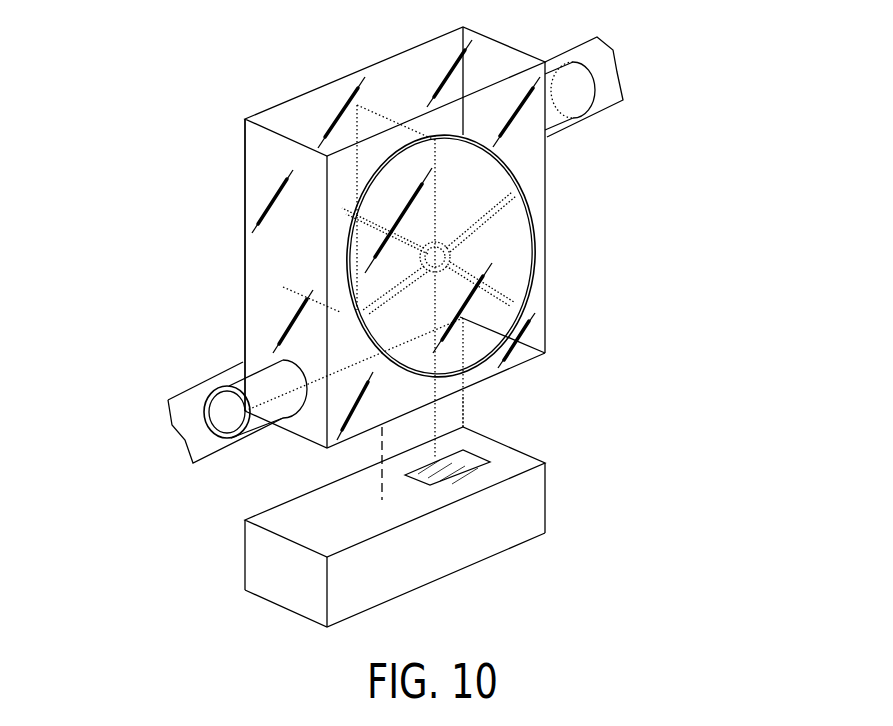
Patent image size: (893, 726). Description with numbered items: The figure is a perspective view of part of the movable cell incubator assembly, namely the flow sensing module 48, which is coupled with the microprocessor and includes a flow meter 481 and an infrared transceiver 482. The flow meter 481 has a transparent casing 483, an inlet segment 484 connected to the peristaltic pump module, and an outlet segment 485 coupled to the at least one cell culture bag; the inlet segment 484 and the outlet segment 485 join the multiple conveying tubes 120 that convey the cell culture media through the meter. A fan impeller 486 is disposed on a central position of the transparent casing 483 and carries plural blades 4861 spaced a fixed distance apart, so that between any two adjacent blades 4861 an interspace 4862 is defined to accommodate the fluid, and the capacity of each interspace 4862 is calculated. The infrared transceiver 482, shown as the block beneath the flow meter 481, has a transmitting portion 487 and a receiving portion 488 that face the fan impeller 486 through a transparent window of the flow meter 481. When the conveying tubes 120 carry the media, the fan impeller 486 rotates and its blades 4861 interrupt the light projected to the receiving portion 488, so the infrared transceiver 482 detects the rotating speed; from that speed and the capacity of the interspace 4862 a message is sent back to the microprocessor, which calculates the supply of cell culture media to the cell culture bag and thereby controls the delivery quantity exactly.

The flow sensing module 48 is at (588, 413).
The conveying tubes 120 is at (618, 72).
The flow meter 481 is at (314, 101).
The infrared transceiver 482 is at (240, 570).
The transparent casing 483 is at (258, 161).
The inlet segment 484 is at (558, 54).
The outlet segment 485 is at (262, 413).
The fan impeller 486 is at (298, 272).
The blades 4861 is at (495, 194).
The interspace 4862 is at (500, 248).
The transmitting portion 487 is at (452, 478).
The receiving portion 488 is at (468, 457).